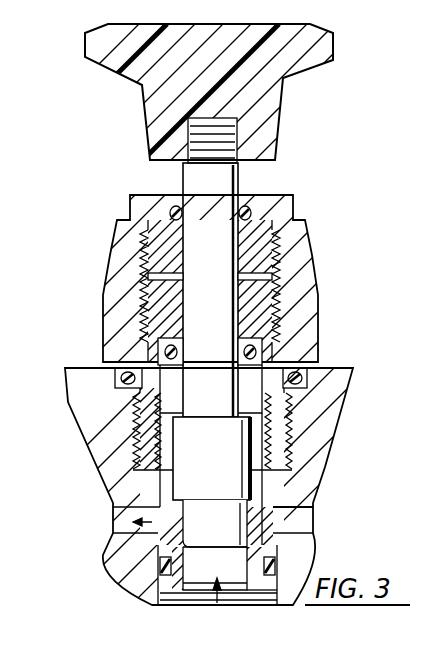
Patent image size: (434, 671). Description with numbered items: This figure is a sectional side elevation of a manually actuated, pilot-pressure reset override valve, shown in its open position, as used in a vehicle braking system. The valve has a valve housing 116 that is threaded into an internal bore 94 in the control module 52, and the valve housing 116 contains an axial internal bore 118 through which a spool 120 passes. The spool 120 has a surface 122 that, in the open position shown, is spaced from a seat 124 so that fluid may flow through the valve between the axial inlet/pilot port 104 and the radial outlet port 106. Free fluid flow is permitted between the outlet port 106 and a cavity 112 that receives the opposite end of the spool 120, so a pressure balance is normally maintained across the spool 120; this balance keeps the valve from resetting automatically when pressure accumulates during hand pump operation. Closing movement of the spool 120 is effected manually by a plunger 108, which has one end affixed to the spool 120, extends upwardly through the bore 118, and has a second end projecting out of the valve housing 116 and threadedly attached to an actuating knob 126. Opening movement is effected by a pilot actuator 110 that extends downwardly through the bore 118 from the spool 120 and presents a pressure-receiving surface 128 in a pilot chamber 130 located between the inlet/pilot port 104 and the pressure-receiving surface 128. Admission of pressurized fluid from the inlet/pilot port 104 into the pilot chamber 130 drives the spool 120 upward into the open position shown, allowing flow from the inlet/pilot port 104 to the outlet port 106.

The control module 52 is at (345, 363).
The internal bore 94 is at (266, 593).
The inlet/pilot port 104 is at (250, 562).
The outlet port 106 is at (113, 524).
The plunger 108 is at (243, 178).
The pilot actuator 110 is at (158, 548).
The cavity 112 is at (178, 403).
The valve housing 116 is at (152, 438).
The axial internal bore 118 is at (172, 462).
The spool 120 is at (190, 483).
The surface 122 is at (222, 503).
The seat 124 is at (265, 503).
The actuating knob 126 is at (277, 122).
The pressure-receiving surface 128 is at (233, 503).
The pilot chamber 130 is at (273, 560).